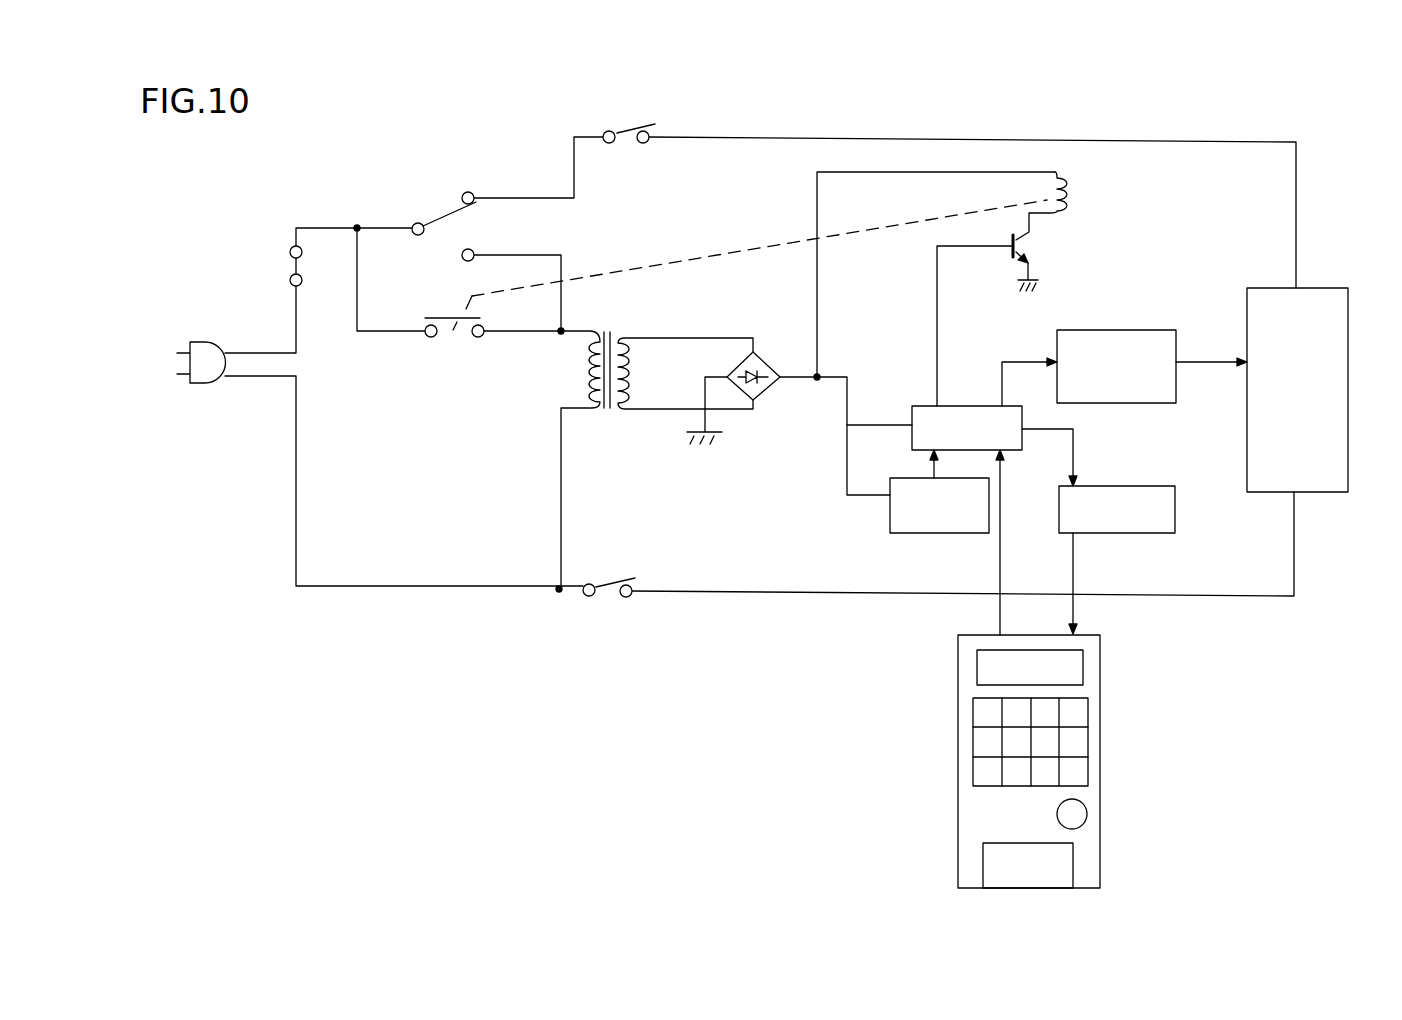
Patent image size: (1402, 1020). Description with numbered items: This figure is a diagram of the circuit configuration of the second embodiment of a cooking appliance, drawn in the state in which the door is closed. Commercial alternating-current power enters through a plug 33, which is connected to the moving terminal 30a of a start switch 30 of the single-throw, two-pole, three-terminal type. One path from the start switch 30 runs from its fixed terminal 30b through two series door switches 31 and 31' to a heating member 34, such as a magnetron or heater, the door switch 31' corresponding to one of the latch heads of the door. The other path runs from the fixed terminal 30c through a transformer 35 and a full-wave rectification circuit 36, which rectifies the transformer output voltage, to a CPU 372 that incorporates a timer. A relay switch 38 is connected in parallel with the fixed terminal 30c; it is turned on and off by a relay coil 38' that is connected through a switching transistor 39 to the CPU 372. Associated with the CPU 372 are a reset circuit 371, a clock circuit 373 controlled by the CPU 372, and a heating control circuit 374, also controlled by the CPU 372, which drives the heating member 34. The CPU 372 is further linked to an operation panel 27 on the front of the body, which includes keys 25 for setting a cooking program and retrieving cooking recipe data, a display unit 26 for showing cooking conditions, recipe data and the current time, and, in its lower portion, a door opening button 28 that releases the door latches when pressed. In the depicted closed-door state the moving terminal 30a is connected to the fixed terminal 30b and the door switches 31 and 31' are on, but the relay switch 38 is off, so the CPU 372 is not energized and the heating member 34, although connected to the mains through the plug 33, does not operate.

The keys 25 is at (1073, 813).
The display unit 26 is at (1087, 667).
The operation panel 27 is at (957, 770).
The door opening button 28 is at (998, 862).
The start switch 30 is at (437, 188).
The moving terminal 30a is at (437, 217).
The fixed terminal 30b is at (472, 192).
The fixed terminal 30c is at (474, 252).
The door switch 31 is at (639, 101).
The door switch 31' is at (618, 631).
The plug 33 is at (218, 345).
The heating member 34 is at (1330, 287).
The transformer 35 is at (615, 330).
The full-wave rectification circuit 36 is at (765, 393).
The relay switch 38 is at (438, 293).
The relay coil 38' is at (1084, 201).
The switching transistor 39 is at (1032, 247).
The reset circuit 371 is at (908, 533).
The CPU 372 is at (967, 403).
The clock circuit 373 is at (1142, 483).
The heating control circuit 374 is at (1097, 330).